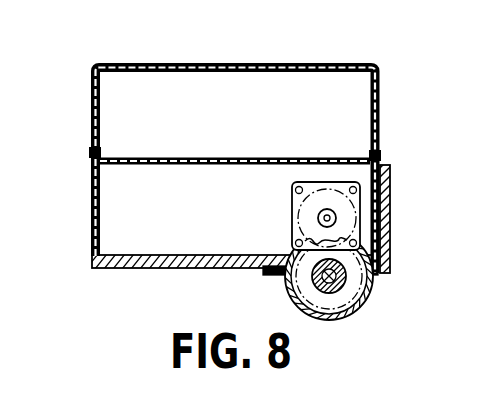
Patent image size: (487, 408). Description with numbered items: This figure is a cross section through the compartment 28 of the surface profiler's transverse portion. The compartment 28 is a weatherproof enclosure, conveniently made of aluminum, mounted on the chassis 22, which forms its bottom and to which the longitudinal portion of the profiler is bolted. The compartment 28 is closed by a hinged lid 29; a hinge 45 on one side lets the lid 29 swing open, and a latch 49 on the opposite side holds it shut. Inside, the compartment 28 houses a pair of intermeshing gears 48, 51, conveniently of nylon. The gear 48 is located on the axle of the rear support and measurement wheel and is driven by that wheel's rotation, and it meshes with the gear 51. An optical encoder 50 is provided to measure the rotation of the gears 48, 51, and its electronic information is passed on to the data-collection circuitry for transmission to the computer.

The chassis 22 is at (117, 268).
The compartment 28 is at (90, 213).
The hinged lid 29 is at (280, 63).
The hinge 45 is at (89, 150).
The latch 49 is at (382, 143).
The optical encoder 50 is at (357, 198).
The gear 51 is at (318, 218).
The gear 48 is at (343, 293).